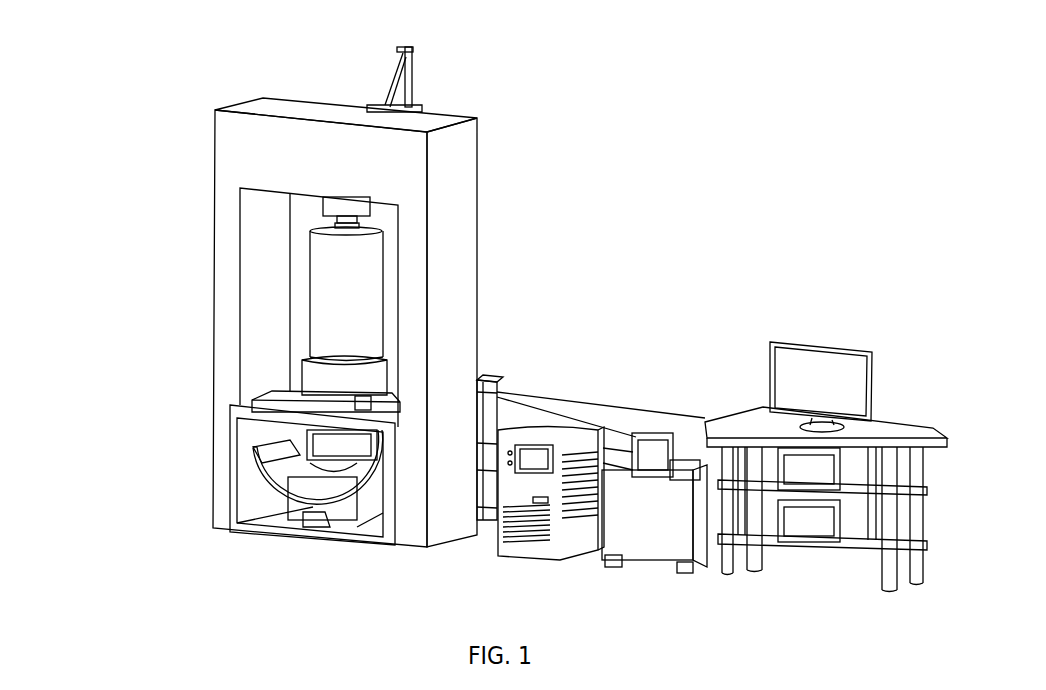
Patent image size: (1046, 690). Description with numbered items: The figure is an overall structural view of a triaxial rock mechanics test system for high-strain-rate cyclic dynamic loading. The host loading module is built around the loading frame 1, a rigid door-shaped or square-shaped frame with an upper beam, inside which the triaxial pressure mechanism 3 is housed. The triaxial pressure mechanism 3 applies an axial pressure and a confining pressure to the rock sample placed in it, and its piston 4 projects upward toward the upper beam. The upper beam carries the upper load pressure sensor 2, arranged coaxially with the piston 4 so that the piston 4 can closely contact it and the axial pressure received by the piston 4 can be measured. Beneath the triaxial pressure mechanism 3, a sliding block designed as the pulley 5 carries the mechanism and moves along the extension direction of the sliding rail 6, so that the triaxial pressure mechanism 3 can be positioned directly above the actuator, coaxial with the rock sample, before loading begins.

The loading frame 1 is at (272, 297).
The upper load pressure sensor 2 is at (287, 108).
The triaxial pressure mechanism 3 is at (456, 294).
The piston 4 is at (472, 145).
The pulley 5 is at (234, 346).
The sliding rail 6 is at (543, 399).